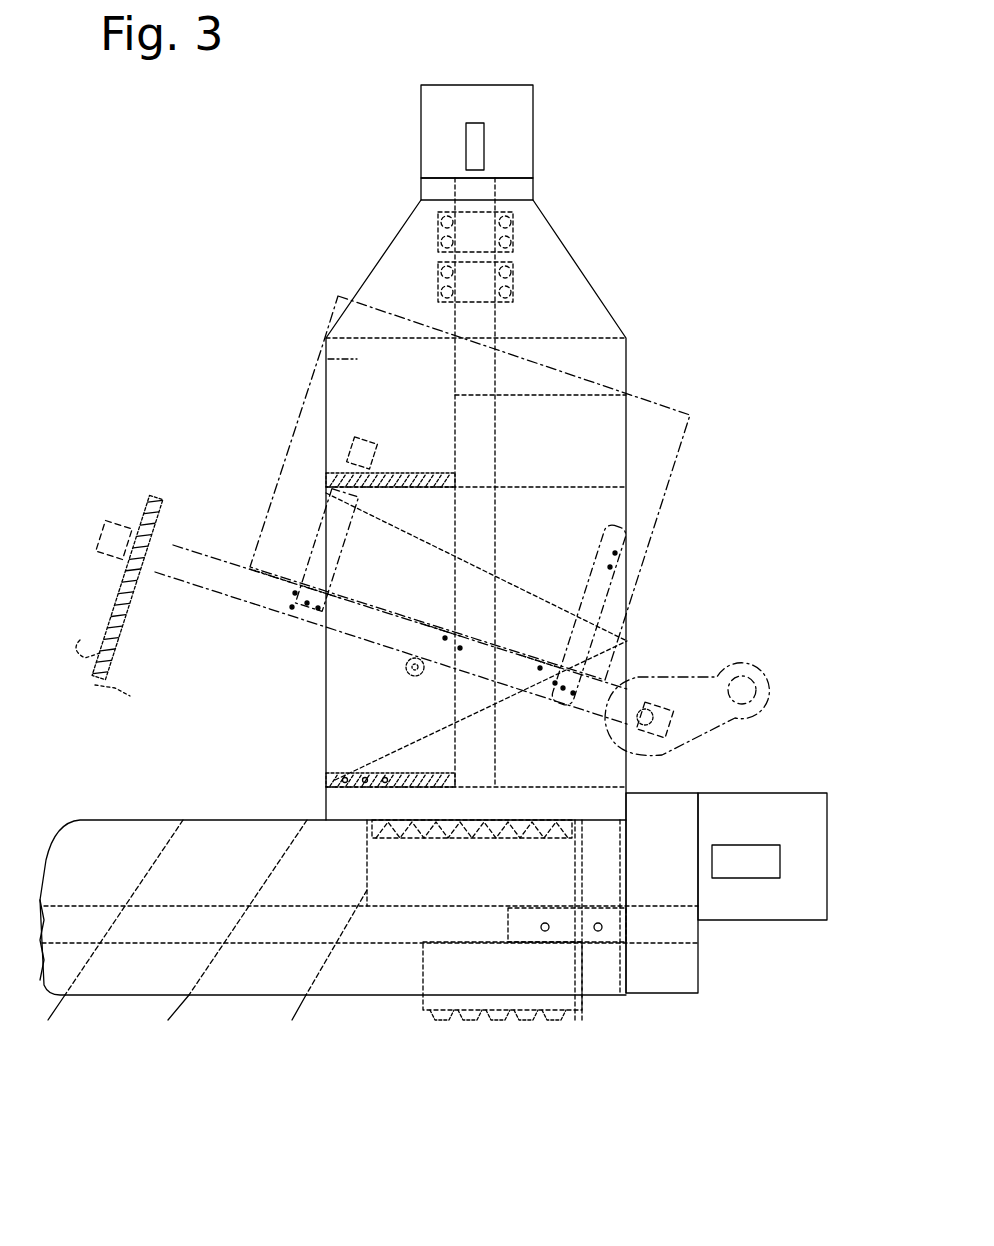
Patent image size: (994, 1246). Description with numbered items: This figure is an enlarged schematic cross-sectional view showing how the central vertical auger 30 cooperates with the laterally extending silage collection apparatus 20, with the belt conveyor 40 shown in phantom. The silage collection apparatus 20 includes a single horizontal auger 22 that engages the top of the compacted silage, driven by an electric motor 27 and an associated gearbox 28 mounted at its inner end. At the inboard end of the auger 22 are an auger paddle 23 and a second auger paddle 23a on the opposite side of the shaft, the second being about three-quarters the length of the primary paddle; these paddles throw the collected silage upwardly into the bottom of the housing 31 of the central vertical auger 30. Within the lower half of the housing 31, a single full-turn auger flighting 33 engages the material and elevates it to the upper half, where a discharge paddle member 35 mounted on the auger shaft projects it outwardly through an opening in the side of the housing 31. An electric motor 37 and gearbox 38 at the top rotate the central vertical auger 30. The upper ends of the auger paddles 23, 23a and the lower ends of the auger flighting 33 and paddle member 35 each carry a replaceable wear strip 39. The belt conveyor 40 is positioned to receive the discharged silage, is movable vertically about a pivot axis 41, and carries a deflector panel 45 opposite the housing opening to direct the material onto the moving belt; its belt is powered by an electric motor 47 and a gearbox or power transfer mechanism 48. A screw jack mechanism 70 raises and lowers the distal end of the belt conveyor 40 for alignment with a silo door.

The silage collection apparatus 20 is at (375, 1015).
The auger 22 is at (225, 953).
The auger paddle 23 is at (540, 868).
The second auger paddle 23a is at (525, 970).
The electric motor 27 is at (748, 920).
The gearbox 28 is at (668, 948).
The central vertical auger 30 is at (345, 250).
The housing 31 is at (640, 400).
The auger flighting 33 is at (445, 730).
The discharge paddle member 35 is at (383, 415).
The electric motor 37 is at (500, 95).
The gearbox 38 is at (515, 190).
The replaceable wear strip 39 is at (407, 483).
The belt conveyor 40 is at (173, 545).
The pivot axis 41 is at (415, 660).
The deflector panel 45 is at (297, 423).
The electric motor 47 is at (742, 660).
The gearbox or power transfer mechanism 48 is at (705, 727).
The screw jack mechanism 70 is at (115, 600).